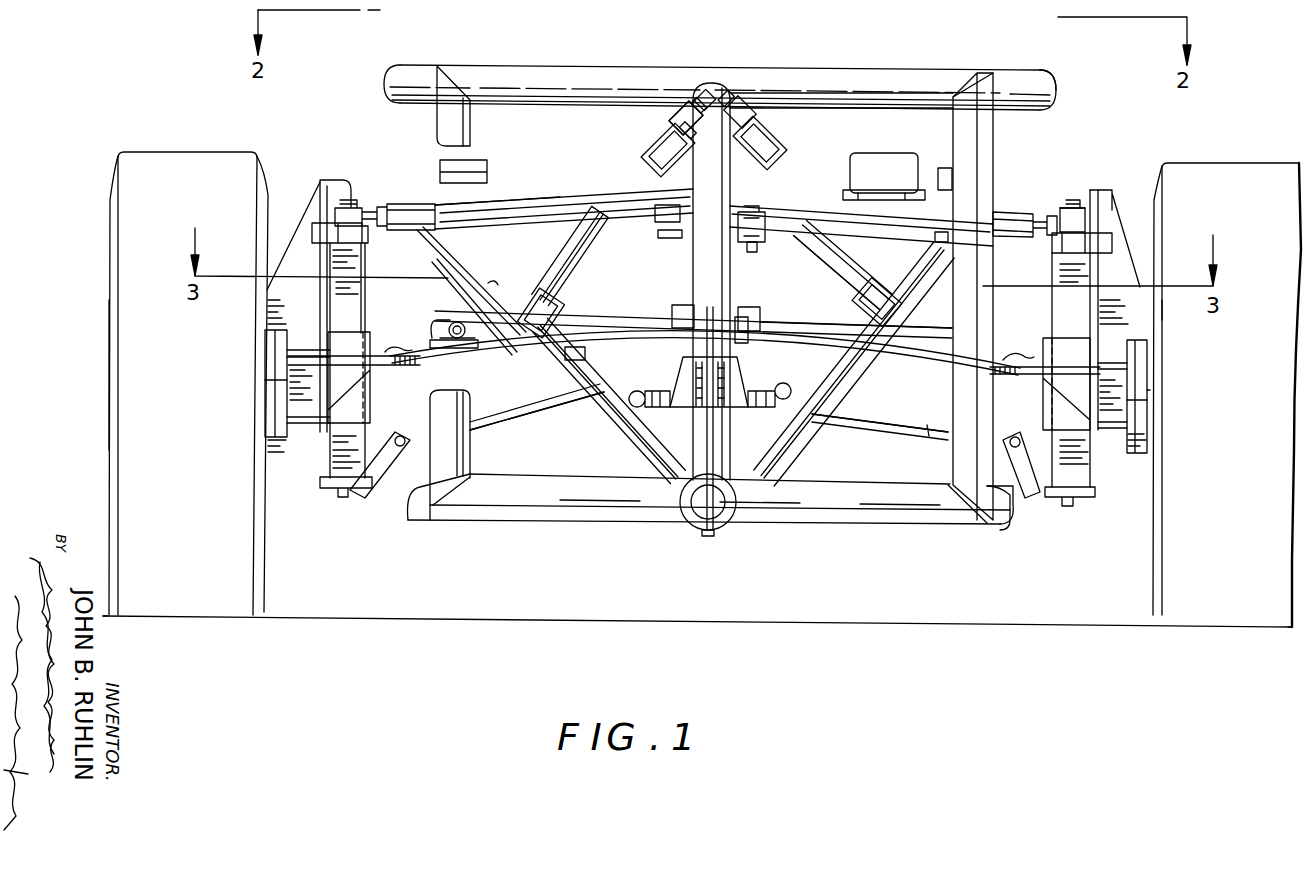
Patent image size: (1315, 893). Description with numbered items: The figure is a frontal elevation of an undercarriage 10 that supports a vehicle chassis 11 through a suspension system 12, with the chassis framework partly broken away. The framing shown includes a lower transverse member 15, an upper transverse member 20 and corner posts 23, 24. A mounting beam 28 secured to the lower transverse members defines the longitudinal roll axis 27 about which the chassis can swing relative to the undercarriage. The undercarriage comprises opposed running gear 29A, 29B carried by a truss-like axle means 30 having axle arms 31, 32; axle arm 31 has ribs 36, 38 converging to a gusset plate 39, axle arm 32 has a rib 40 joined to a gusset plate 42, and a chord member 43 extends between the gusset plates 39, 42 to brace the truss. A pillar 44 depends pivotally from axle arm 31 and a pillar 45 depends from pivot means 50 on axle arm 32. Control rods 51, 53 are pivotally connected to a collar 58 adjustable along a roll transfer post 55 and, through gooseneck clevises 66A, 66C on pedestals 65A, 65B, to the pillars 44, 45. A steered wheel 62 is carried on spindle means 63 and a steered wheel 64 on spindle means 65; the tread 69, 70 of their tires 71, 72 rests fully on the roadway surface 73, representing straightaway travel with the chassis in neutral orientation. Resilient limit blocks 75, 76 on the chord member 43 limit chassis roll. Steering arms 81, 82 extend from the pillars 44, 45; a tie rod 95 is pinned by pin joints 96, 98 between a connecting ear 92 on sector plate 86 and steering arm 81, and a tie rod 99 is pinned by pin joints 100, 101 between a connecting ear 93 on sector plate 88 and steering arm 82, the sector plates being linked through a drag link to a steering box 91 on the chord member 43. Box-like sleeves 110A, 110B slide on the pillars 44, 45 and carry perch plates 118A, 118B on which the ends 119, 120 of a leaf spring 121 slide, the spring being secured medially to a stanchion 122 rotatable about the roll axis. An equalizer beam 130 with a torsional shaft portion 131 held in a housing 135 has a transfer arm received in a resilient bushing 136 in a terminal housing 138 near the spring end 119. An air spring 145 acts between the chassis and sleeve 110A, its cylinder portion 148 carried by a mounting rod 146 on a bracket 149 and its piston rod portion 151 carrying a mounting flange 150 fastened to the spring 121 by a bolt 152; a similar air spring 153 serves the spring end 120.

The undercarriage 10 is at (1080, 168).
The vehicle chassis 11 is at (1062, 78).
The suspension system 12 is at (488, 372).
The lower transverse member 15 is at (880, 505).
The upper transverse member 20 is at (868, 72).
The corner post 23 is at (440, 480).
The corner post 24 is at (960, 500).
The roll axis 27 is at (700, 522).
The mounting beam 28 is at (720, 522).
The running gear 29A is at (282, 452).
The running gear 29B is at (1120, 486).
The axle means 30 is at (813, 449).
The axle arm 31 is at (496, 263).
The axle arm 32 is at (921, 272).
The rib 36 is at (640, 428).
The rib 38 is at (586, 354).
The gusset plate 39 is at (492, 206).
The rib 40 is at (778, 437).
The gusset plate 42 is at (936, 238).
The chord member 43 is at (572, 190).
The pillar 44 is at (358, 298).
The pillar 45 is at (1085, 320).
The pivot means 50 is at (1068, 202).
The control rod 51 is at (505, 432).
The control rod 53 is at (922, 437).
The roll transfer post 55 is at (718, 98).
The collar 58 is at (695, 405).
The steered wheel 62 is at (110, 229).
The spindle means 63 is at (272, 404).
The steered wheel 64 is at (1152, 502).
The spindle means 65 is at (1143, 398).
The pedestal 65A is at (345, 490).
The pedestal 65B is at (1068, 508).
The gooseneck clevis 66A is at (388, 478).
The gooseneck clevis 66C is at (1032, 490).
The tread 69 is at (222, 617).
The tread 70 is at (1215, 628).
The tire 71 is at (105, 380).
The tire 72 is at (1150, 578).
The roadway surface 73 is at (918, 626).
The resilient limit block 75 is at (480, 163).
The resilient limit block 76 is at (946, 168).
The steering arm 81 is at (368, 237).
The steering arm 82 is at (1054, 240).
The sector plate 86 is at (677, 232).
The sector plate 88 is at (785, 152).
The steering box 91 is at (884, 176).
The connecting ear 92 is at (768, 237).
The connecting ear 93 is at (660, 166).
The tie rod 95 is at (568, 218).
The pin joint 96 is at (751, 253).
The pin joint 98 is at (348, 200).
The tie rod 99 is at (815, 205).
The pin joint 100 is at (655, 212).
The pin joint 101 is at (1070, 208).
The box-like sleeve 110A is at (370, 405).
The sleeve 110B is at (1042, 398).
The perch plate 118A is at (392, 365).
The perch plate 118B is at (1010, 376).
The spring end 119 is at (415, 348).
The spring end 120 is at (1013, 355).
The leaf spring 121 is at (780, 330).
The stanchion 122 is at (741, 337).
The equalizer beam 130 is at (592, 293).
The torsional shaft portion 131 is at (643, 314).
The housing 135 is at (428, 323).
The resilient bushing 136 is at (442, 348).
The terminal housing 138 is at (456, 321).
The air spring 145 is at (565, 249).
The mounting rod 146 is at (693, 96).
The cylinder portion 148 is at (590, 242).
The bracket 149 is at (678, 110).
The mounting flange 150 is at (528, 335).
The piston rod portion 151 is at (496, 286).
The bolt 152 is at (472, 310).
The air spring 153 is at (852, 302).